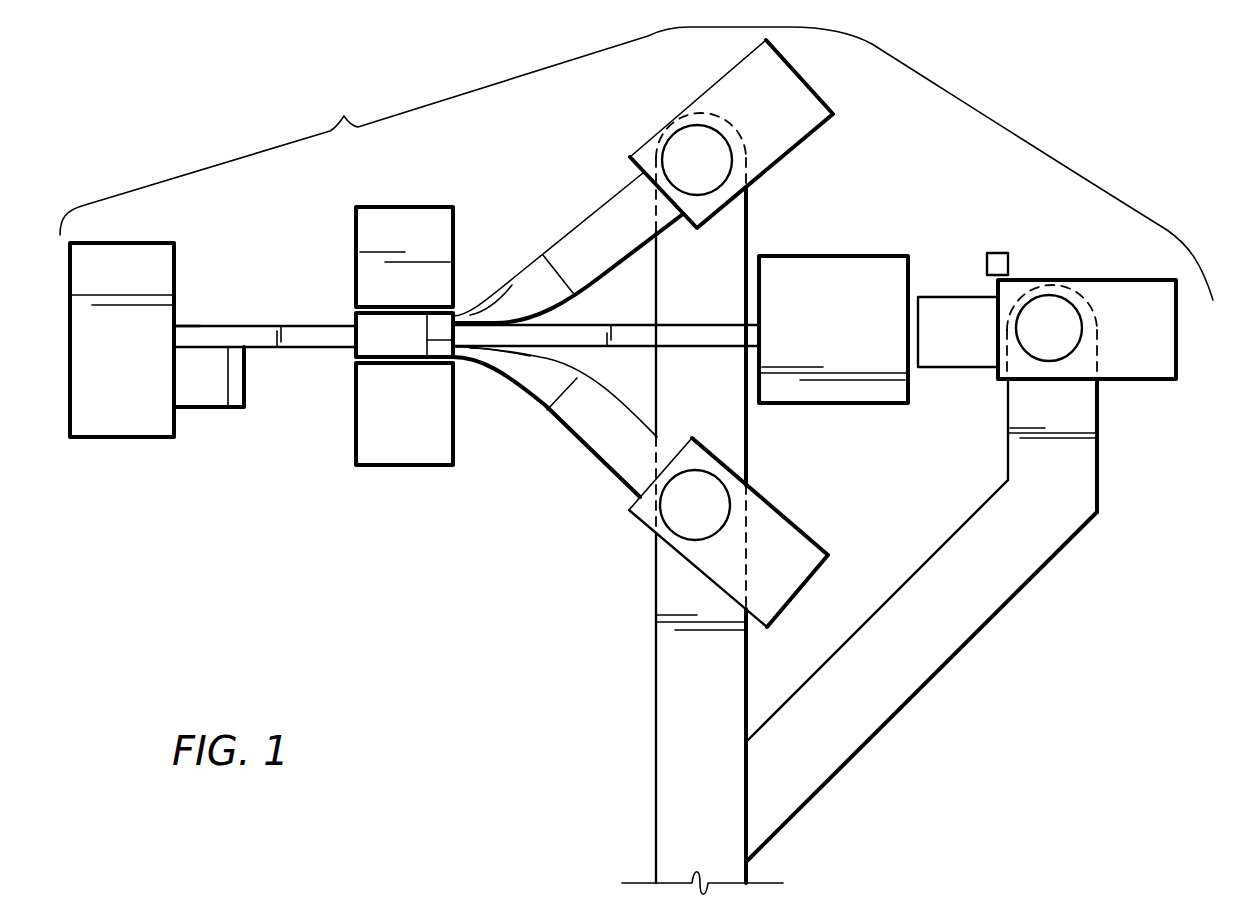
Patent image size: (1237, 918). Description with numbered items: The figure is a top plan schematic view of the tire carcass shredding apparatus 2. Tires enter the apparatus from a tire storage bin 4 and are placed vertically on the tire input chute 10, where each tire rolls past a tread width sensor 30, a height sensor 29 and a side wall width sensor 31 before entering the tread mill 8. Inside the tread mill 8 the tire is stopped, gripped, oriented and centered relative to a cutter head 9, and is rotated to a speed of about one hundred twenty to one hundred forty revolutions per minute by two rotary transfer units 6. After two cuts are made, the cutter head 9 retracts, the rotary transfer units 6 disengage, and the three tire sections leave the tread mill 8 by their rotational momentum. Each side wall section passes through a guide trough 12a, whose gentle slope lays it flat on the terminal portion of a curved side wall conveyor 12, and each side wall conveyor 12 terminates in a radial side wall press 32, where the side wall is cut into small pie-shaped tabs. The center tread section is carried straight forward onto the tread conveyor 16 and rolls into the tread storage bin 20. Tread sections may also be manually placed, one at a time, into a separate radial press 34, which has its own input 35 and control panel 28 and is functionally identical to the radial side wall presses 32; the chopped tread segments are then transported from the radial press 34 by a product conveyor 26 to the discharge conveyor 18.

The tire carcass shredding apparatus 2 is at (636, 163).
The tire storage bin 4 is at (146, 438).
The rotary transfer units 6 is at (427, 208).
The tread mill 8 is at (356, 320).
The cutter head 9 is at (441, 345).
The tire input chute 10 is at (225, 326).
The side wall conveyors 12 is at (573, 228).
The guide trough 12a is at (503, 308).
The tread conveyor 16 is at (585, 322).
The discharge conveyor 18 is at (748, 223).
The tread storage bin 20 is at (851, 256).
The product conveyor 26 is at (982, 631).
The control panel 28 is at (1009, 262).
The height sensor 29 is at (178, 332).
The tread width sensor 30 is at (214, 408).
The side wall width sensor 31 is at (246, 380).
The radial side wall press 32 is at (680, 145).
The radial press 34 is at (1052, 345).
The input 35 is at (948, 368).